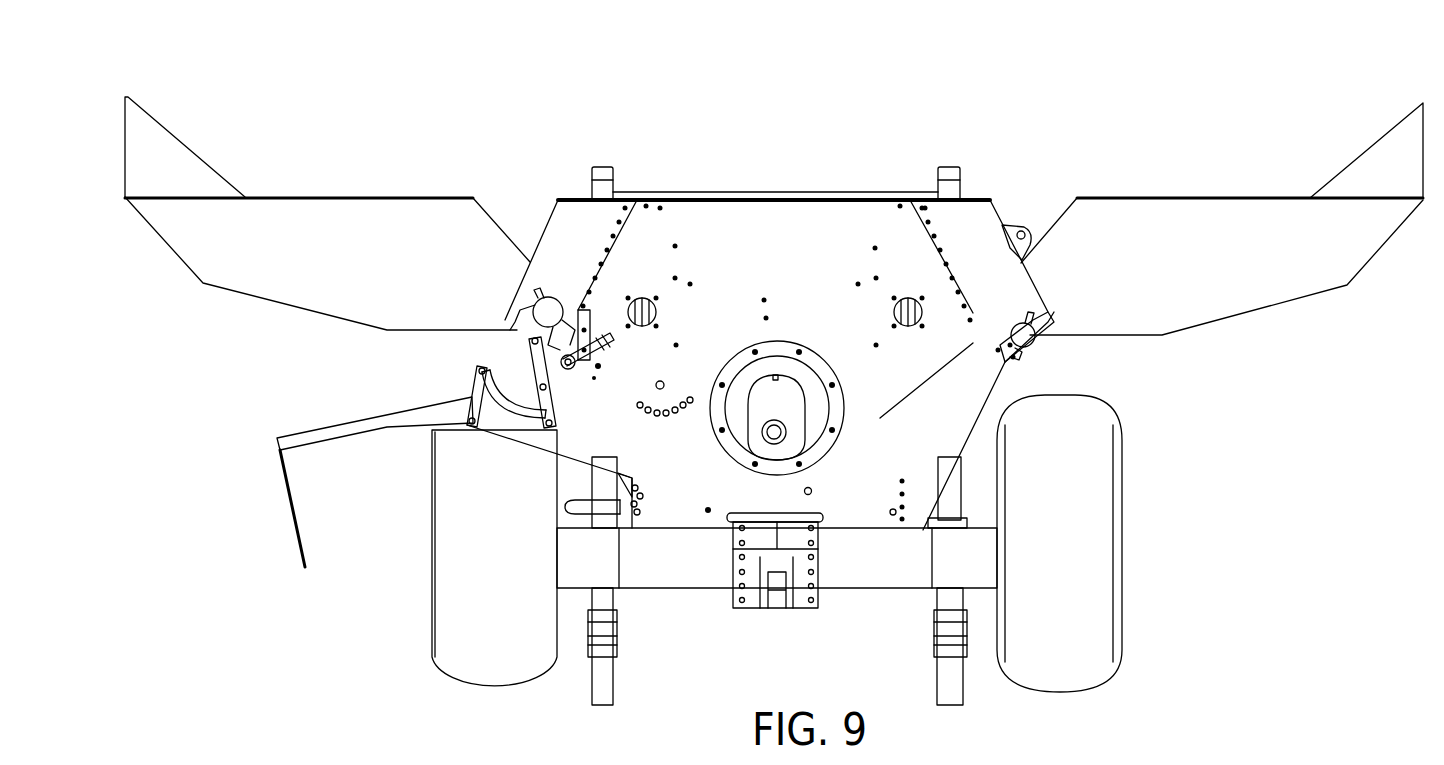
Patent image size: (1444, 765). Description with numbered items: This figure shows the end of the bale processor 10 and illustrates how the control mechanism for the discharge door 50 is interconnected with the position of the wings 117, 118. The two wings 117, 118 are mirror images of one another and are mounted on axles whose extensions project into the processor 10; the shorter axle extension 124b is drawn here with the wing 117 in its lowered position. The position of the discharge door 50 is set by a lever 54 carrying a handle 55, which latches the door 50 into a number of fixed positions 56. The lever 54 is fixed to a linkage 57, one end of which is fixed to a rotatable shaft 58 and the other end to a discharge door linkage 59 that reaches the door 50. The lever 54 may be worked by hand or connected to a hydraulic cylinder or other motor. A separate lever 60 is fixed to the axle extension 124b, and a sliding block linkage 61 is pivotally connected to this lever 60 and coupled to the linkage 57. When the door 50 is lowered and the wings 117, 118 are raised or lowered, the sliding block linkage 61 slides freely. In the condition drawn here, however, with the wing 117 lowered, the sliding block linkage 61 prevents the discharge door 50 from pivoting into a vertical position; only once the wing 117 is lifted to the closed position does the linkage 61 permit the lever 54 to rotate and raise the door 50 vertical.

The processor 10 is at (775, 150).
The wing 117 is at (352, 206).
The wing 118 is at (1198, 206).
The axle extension 124b is at (565, 302).
The lever 60 is at (520, 297).
The handle 55 is at (608, 348).
The sliding block linkage 61 is at (520, 352).
The lever 54 is at (612, 340).
The discharge door linkage 59 is at (468, 392).
The fixed positions 56 is at (600, 370).
The rotatable shaft 58 is at (586, 374).
The linkage 57 is at (497, 418).
The discharge door 50 is at (323, 450).